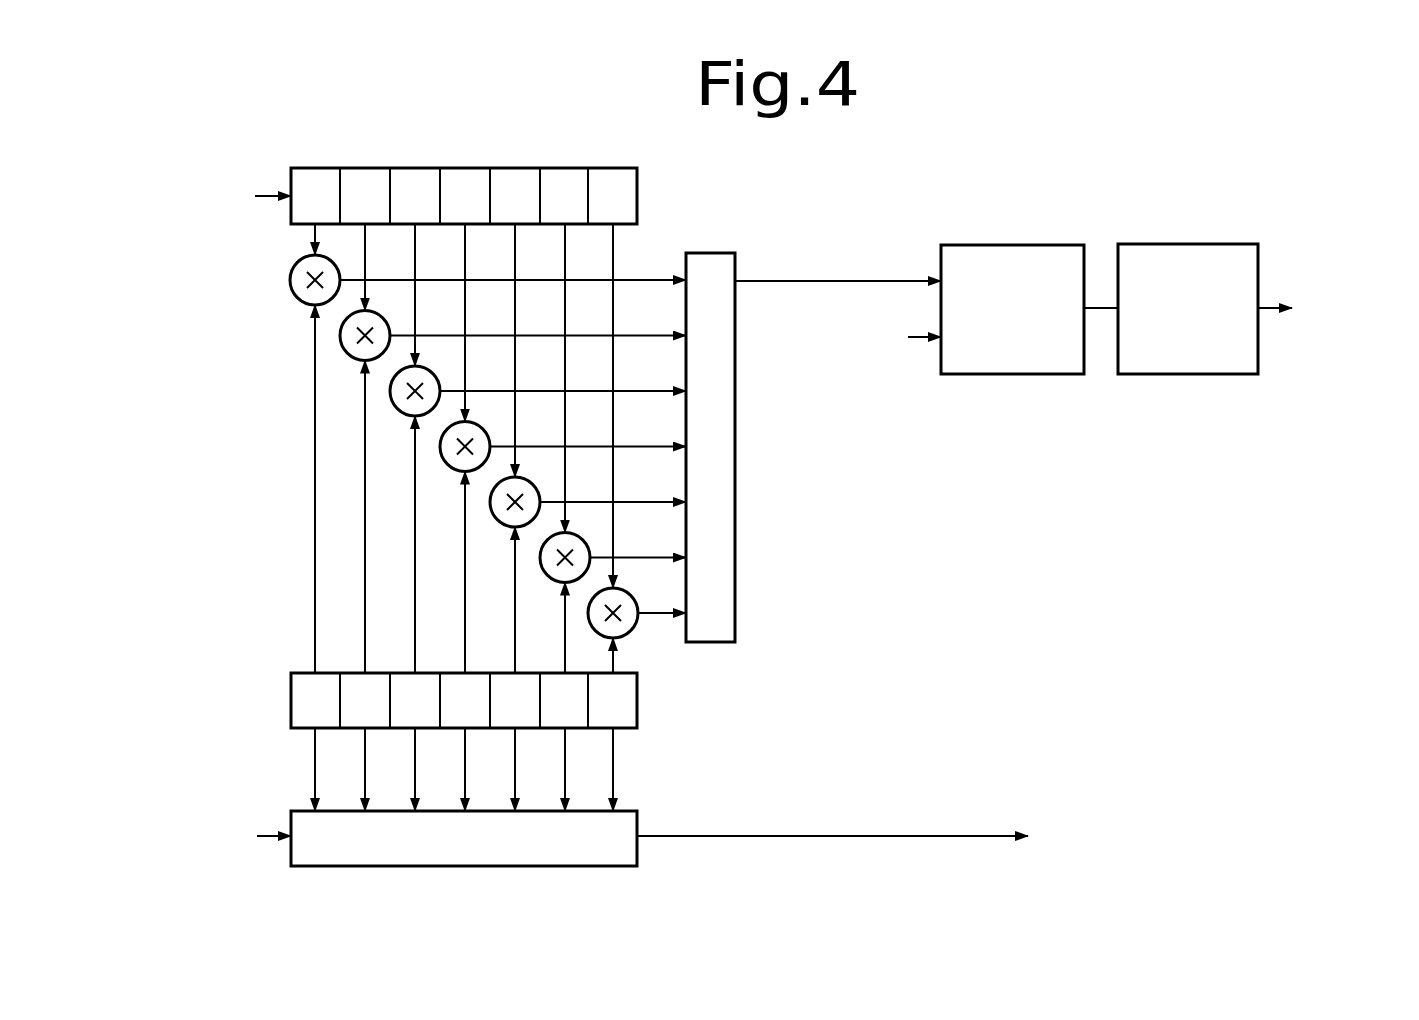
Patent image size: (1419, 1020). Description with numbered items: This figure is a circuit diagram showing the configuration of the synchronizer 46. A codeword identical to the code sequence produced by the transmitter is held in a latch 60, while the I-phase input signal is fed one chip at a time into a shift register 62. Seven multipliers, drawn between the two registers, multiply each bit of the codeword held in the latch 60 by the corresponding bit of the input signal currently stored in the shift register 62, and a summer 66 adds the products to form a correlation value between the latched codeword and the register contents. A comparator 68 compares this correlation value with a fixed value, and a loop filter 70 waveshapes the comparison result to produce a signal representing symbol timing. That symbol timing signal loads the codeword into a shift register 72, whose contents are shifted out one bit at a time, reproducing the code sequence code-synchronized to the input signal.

The synchronizer 46 is at (824, 884).
The latch 60 is at (637, 715).
The shift register 62 is at (637, 185).
The summer 66 is at (722, 253).
The comparator 68 is at (1065, 245).
The loop filter 70 is at (1238, 244).
The shift register 72 is at (637, 822).